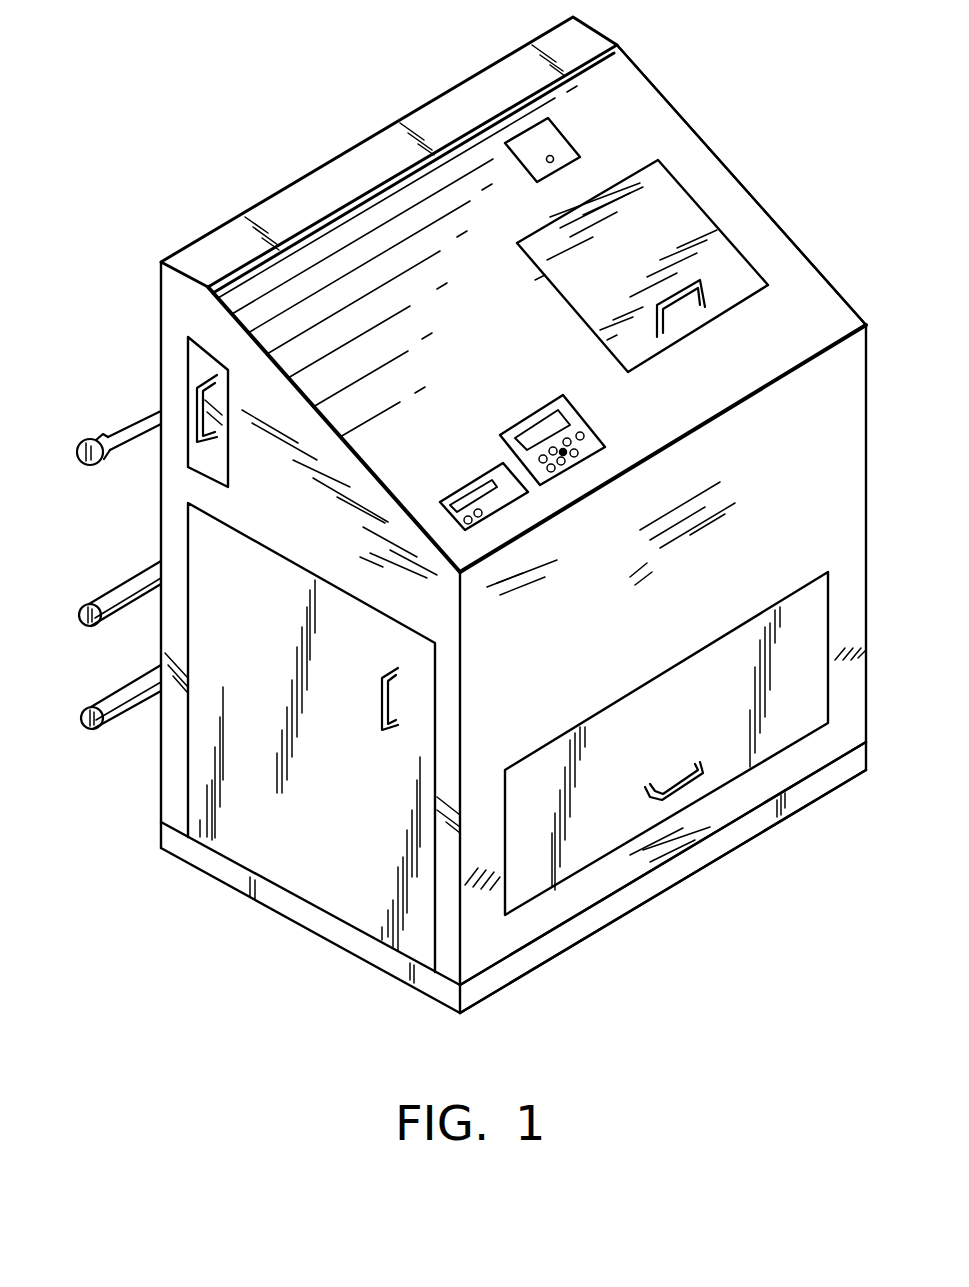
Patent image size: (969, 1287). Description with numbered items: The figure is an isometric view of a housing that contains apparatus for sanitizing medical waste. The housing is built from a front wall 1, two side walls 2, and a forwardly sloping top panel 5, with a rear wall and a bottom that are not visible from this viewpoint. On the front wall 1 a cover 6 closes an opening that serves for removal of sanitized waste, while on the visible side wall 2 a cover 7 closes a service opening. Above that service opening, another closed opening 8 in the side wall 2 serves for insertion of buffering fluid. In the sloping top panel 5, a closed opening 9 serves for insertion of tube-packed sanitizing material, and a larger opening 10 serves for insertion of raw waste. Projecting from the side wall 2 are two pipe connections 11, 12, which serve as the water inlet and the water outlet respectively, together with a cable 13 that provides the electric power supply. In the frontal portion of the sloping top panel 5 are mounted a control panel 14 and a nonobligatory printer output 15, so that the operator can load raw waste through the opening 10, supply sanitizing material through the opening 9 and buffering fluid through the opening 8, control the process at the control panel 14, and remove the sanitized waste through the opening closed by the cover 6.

The front wall 1 is at (515, 943).
The side wall 2 is at (168, 482).
The forwardly sloping top panel 5 is at (658, 110).
The cover 6 is at (820, 683).
The cover 7 is at (257, 862).
The closed opening 8 is at (195, 355).
The closed opening 9 is at (538, 135).
The opening 10 is at (737, 260).
The pipe connection 11 is at (127, 710).
The pipe connection 12 is at (82, 625).
The cable 13 is at (97, 438).
The control panel 14 is at (545, 425).
The printer output 15 is at (493, 472).